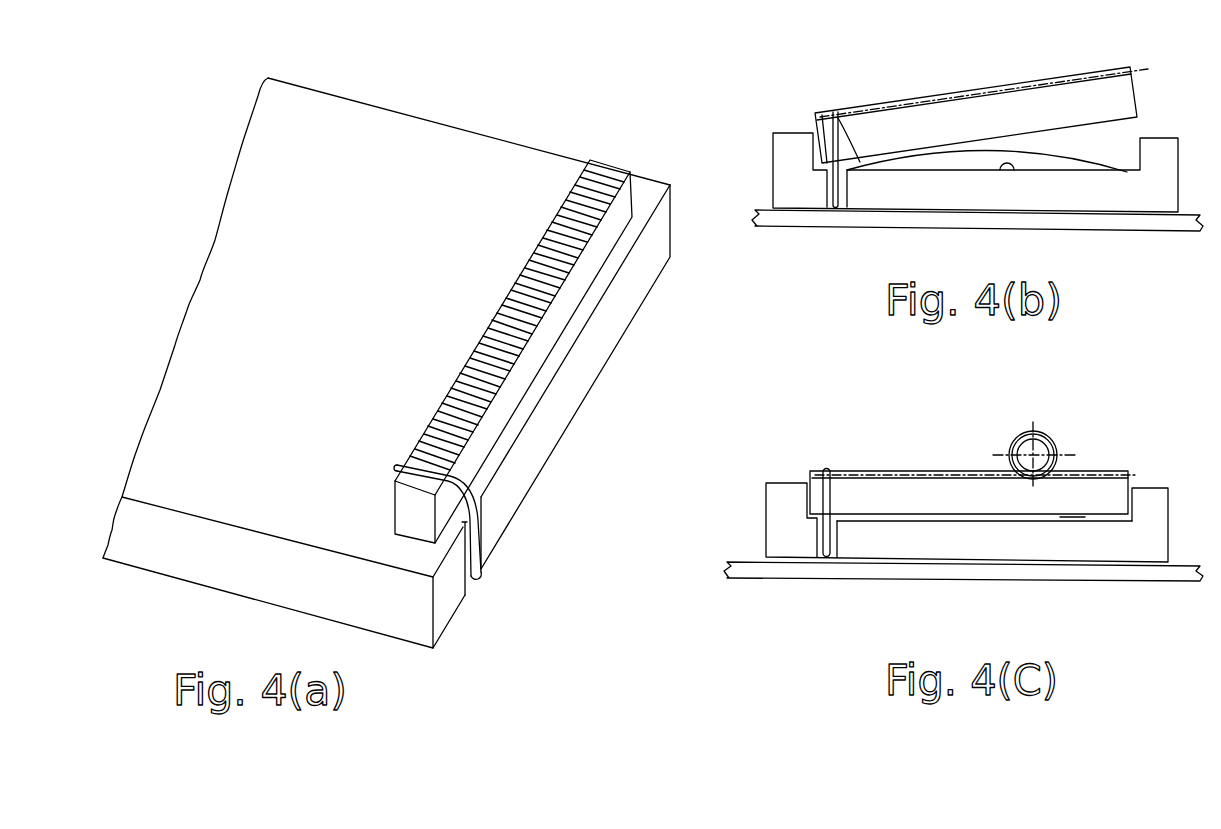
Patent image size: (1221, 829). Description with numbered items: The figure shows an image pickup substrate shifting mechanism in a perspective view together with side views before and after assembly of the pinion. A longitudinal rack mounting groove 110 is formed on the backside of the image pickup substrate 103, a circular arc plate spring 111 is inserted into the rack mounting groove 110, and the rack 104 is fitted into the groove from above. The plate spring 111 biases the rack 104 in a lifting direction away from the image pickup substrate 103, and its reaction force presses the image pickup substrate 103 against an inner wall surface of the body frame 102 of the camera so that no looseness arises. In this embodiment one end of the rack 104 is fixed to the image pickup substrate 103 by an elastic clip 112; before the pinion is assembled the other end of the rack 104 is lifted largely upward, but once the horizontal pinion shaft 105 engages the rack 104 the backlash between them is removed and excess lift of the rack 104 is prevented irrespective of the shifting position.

In FIG. 4B, the body frame 102 is at (917, 228).
In FIG. 4C, the body frame 102 is at (898, 580).
In FIG. 4A, the image pickup substrate 103 is at (485, 155).
In FIG. 4B, the image pickup substrate 103 is at (773, 163).
In FIG. 4C, the image pickup substrate 103 is at (766, 515).
In FIG. 4A, the rack 104 is at (612, 167).
In FIG. 4B, the rack 104 is at (922, 95).
In FIG. 4C, the rack 104 is at (908, 470).
In FIG. 4C, the horizontal pinion shaft 105 is at (1047, 437).
In FIG. 4B, the rack mounting groove 110 is at (1012, 170).
In FIG. 4C, the rack mounting groove 110 is at (1073, 517).
In FIG. 4B, the plate spring 111 is at (1103, 163).
In FIG. 4C, the plate spring 111 is at (1060, 523).
In FIG. 4A, the elastic clip 112 is at (457, 482).
In FIG. 4B, the elastic clip 112 is at (852, 118).
In FIG. 4C, the elastic clip 112 is at (828, 468).